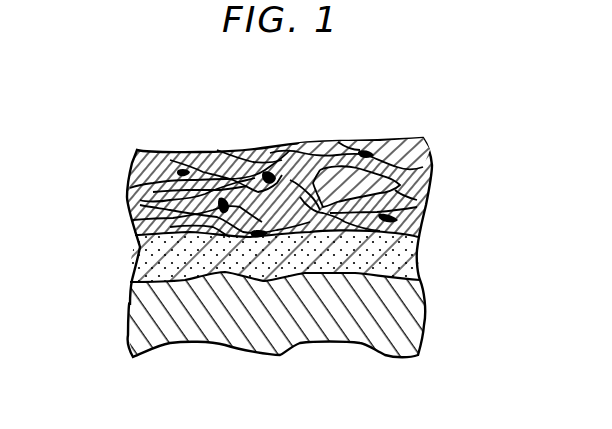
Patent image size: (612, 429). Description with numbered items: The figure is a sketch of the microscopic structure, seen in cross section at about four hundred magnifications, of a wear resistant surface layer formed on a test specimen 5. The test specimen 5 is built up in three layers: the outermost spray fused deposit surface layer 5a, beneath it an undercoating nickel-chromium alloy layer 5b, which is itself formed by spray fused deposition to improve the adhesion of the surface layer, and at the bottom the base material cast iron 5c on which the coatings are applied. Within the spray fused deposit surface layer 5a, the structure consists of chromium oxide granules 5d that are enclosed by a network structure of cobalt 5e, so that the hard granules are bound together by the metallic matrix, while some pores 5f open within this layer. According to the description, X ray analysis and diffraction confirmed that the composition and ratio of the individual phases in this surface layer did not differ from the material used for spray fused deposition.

The test specimen 5 is at (394, 131).
The spray fused deposit surface layer 5a is at (450, 138).
The undercoating nickel-chromium alloy layer 5b is at (387, 259).
The base material cast iron 5c is at (387, 317).
The chromium oxide granules 5d is at (164, 152).
The cobalt 5e is at (275, 150).
The pores 5f is at (364, 143).